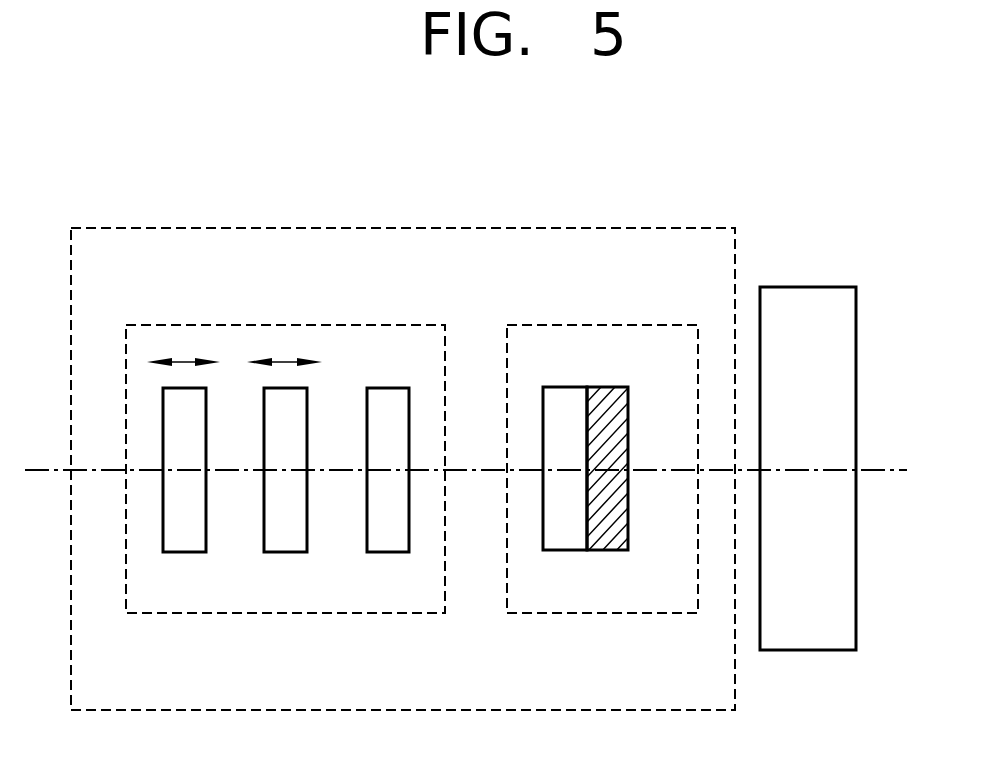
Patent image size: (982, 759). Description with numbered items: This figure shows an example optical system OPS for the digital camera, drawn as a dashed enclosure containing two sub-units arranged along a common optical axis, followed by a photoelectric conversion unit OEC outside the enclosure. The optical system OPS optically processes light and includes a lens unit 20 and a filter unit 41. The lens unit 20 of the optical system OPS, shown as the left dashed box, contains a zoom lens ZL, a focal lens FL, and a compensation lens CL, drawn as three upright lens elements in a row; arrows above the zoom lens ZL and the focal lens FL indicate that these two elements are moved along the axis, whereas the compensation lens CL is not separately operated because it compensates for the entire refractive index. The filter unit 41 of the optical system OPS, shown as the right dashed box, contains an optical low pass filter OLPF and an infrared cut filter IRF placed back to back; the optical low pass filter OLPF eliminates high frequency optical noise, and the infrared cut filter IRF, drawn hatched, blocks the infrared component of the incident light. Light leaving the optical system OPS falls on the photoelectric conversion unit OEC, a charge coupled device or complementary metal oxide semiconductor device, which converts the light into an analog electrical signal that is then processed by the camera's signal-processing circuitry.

The optical system OPS is at (403, 228).
The lens unit 20 is at (286, 325).
The filter unit 41 is at (608, 325).
The zoom lens ZL is at (183, 553).
The focal lens FL is at (284, 553).
The compensation lens CL is at (385, 553).
The optical low pass filter OLPF is at (558, 552).
The infrared cut filter IRF is at (615, 552).
The photoelectric conversion unit OEC is at (808, 287).